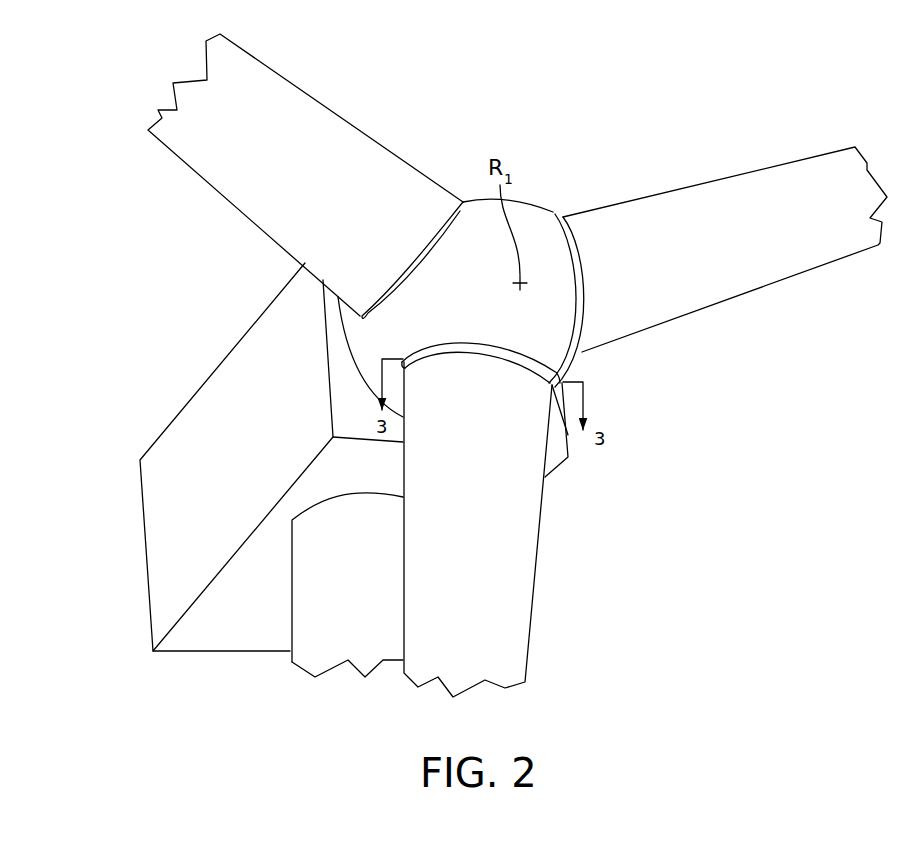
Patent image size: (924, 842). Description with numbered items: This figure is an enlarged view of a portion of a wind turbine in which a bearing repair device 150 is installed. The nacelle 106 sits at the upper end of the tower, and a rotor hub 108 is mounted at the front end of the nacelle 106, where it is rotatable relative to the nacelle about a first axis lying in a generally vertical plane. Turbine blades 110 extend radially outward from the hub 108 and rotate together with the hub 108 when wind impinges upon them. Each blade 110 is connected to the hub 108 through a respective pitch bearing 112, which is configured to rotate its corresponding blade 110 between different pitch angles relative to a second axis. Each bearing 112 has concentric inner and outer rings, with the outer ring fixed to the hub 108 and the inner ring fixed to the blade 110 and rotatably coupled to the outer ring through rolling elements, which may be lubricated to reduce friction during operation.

The nacelle 106 is at (195, 447).
The rotor hub 108 is at (533, 250).
The turbine blade 110 is at (762, 250).
The pitch bearing 112 is at (440, 237).
The bearing repair device 150 is at (483, 270).